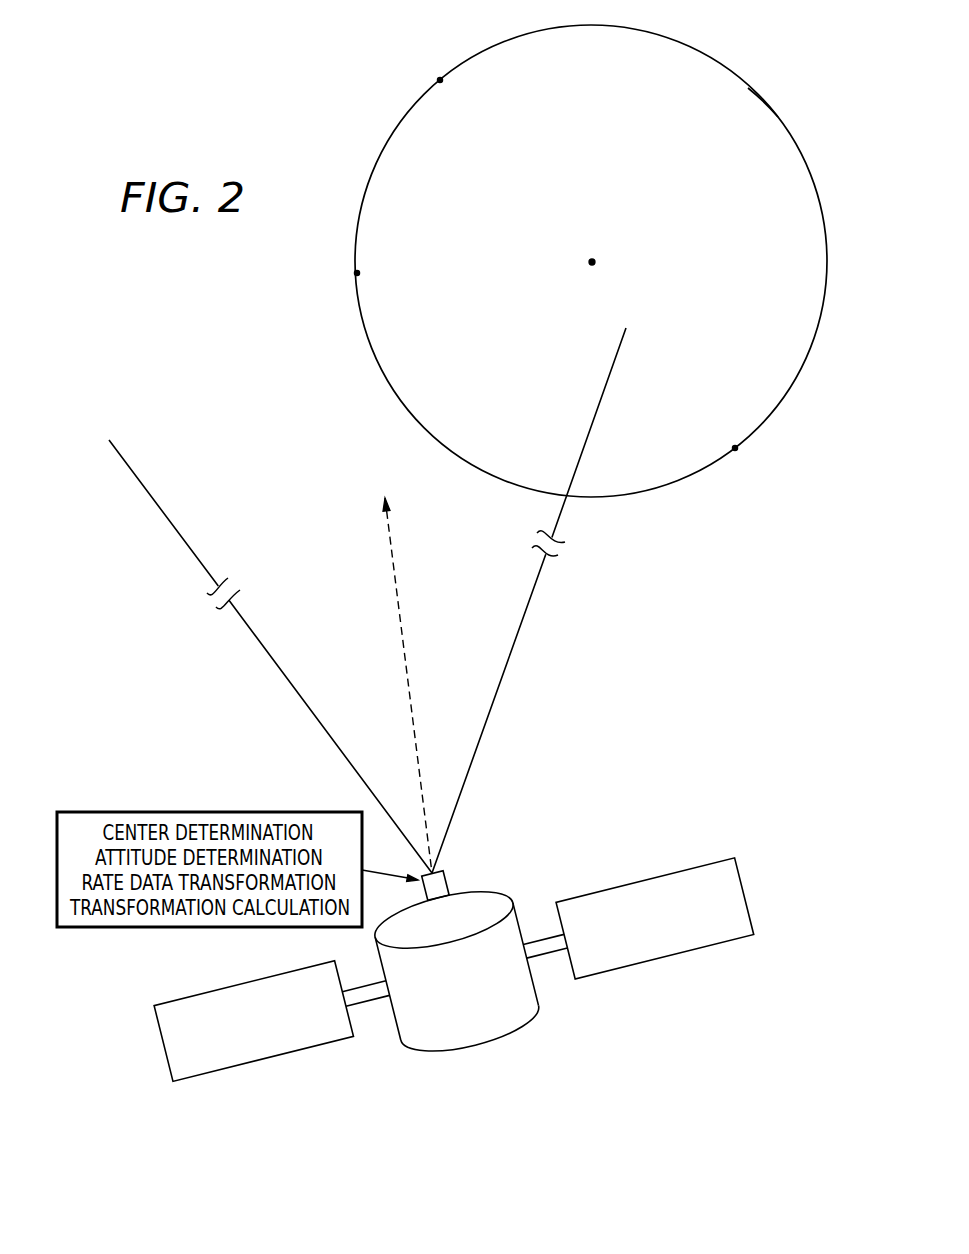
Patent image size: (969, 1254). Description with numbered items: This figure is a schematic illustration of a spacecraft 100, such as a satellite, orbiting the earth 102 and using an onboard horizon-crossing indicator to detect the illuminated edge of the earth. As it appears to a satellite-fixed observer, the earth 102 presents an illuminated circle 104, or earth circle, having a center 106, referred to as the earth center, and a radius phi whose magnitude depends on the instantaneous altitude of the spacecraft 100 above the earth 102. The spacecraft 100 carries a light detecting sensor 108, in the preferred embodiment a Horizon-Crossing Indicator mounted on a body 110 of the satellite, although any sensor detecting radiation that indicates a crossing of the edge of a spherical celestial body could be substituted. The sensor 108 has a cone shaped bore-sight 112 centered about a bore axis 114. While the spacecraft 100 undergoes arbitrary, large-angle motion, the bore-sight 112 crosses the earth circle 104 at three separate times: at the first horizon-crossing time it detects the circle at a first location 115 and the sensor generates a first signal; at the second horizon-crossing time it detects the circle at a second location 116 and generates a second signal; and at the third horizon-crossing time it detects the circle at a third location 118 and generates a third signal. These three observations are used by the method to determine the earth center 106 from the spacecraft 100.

The spacecraft 100 is at (720, 821).
The earth 102 is at (782, 303).
The illuminated circle 104 is at (764, 102).
The center 106 is at (592, 262).
The light detecting sensor 108 is at (448, 880).
The body 110 is at (493, 890).
The bore-sight 112 is at (165, 515).
The bore axis 114 is at (398, 592).
The first location 115 is at (357, 273).
The second location 116 is at (434, 75).
The third location 118 is at (735, 448).